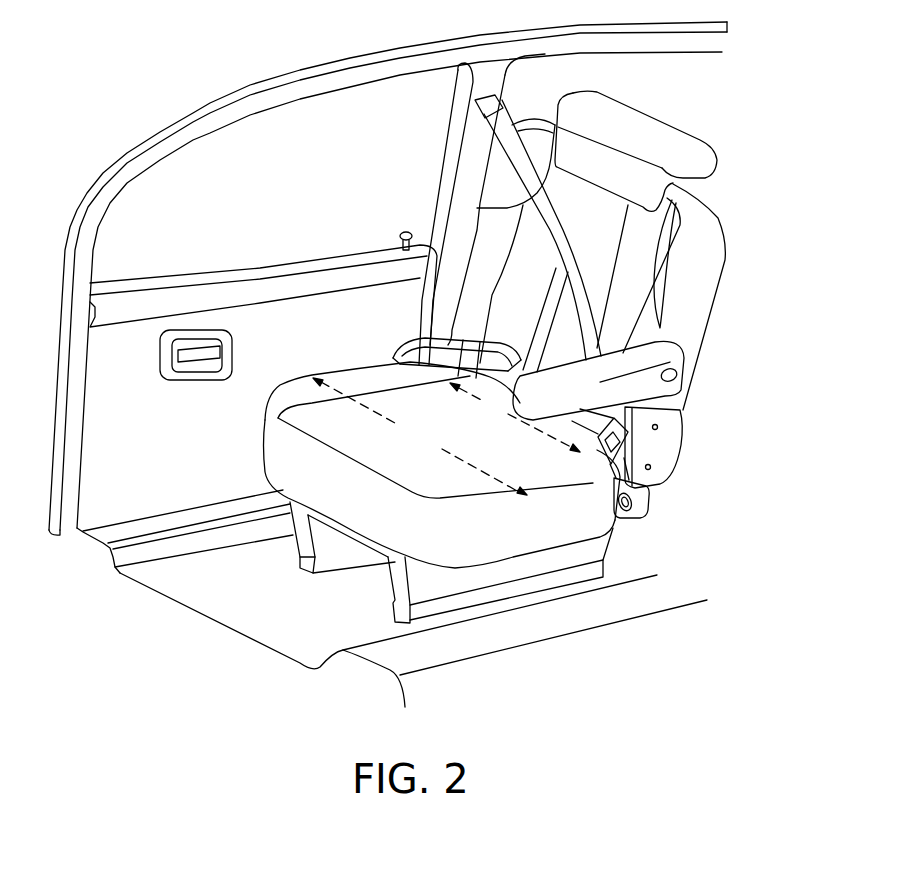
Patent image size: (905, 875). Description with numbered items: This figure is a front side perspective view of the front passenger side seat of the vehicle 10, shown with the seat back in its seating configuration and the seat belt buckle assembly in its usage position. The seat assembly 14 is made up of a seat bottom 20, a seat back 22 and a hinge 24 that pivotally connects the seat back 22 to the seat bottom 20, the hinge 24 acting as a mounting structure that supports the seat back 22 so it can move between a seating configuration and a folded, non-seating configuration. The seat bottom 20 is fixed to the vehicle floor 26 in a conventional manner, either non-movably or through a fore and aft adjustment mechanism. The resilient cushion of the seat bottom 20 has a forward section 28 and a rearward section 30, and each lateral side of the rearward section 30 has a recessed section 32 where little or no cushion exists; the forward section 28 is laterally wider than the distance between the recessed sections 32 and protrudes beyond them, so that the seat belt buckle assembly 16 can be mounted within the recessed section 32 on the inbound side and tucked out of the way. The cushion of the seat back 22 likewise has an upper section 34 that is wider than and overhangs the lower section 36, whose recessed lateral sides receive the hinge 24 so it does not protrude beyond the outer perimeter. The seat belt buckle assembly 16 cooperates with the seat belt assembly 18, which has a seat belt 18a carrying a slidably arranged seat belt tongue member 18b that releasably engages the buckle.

The vehicle 10 is at (148, 93).
The seat assembly 14 is at (535, 365).
The seat belt buckle assembly 16 is at (642, 522).
The seat belt assembly 18 is at (589, 261).
The seat belt 18a is at (518, 345).
The seat belt tongue member 18b is at (622, 403).
The seat bottom 20 is at (240, 427).
The seat back 22 is at (741, 258).
The hinge 24 is at (695, 452).
The vehicle floor 26 is at (272, 617).
The forward section 28 is at (493, 536).
The rearward section 30 is at (597, 440).
The recessed section 32 is at (647, 495).
The upper section 34 is at (637, 242).
The lower section 36 is at (522, 371).